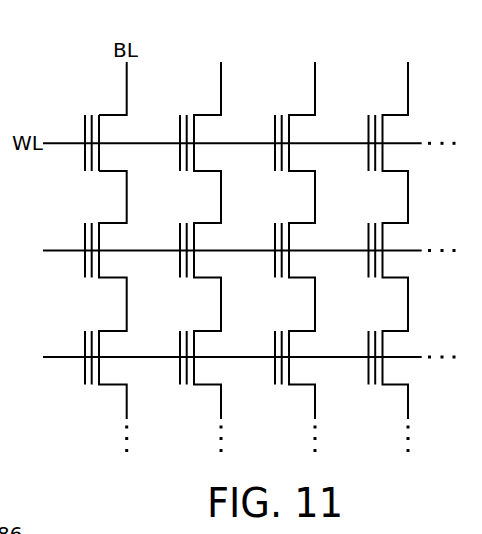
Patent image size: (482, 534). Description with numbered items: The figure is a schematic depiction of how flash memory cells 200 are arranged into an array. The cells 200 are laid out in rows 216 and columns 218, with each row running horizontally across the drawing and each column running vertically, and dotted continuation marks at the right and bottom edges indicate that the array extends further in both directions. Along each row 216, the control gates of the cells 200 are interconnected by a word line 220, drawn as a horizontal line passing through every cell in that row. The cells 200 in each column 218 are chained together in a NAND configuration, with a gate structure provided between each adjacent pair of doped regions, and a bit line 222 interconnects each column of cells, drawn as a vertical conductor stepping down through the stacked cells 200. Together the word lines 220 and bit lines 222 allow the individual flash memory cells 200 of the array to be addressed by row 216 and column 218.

The flash memory cell 200 is at (110, 113).
The bit line 222 is at (155, 84).
The word line 220 is at (53, 144).
The column 218 is at (319, 45).
The row 216 is at (447, 123).